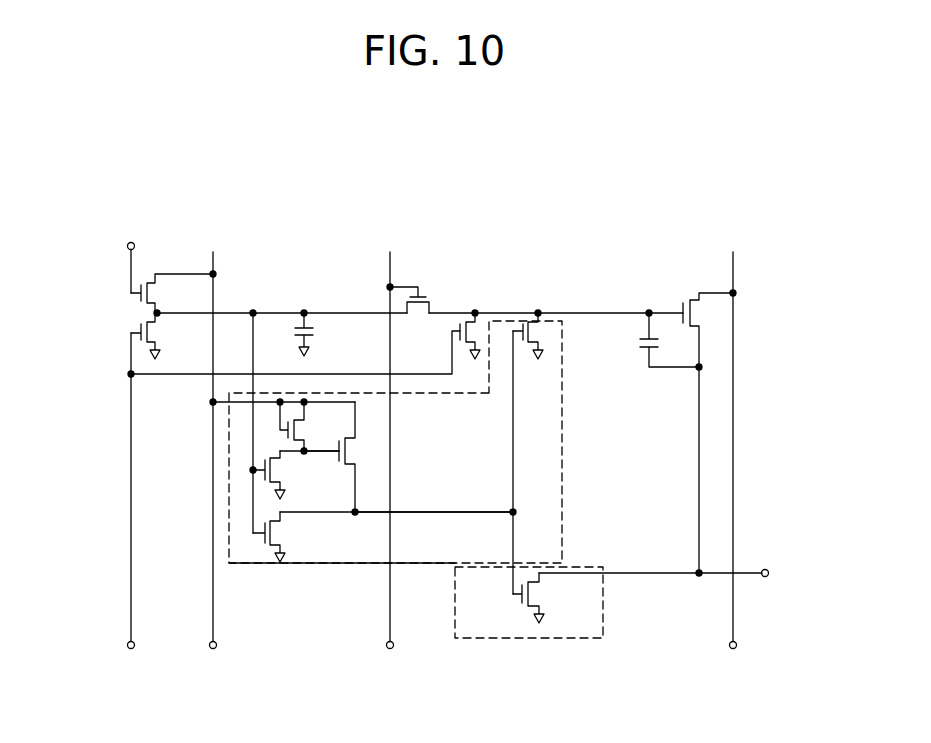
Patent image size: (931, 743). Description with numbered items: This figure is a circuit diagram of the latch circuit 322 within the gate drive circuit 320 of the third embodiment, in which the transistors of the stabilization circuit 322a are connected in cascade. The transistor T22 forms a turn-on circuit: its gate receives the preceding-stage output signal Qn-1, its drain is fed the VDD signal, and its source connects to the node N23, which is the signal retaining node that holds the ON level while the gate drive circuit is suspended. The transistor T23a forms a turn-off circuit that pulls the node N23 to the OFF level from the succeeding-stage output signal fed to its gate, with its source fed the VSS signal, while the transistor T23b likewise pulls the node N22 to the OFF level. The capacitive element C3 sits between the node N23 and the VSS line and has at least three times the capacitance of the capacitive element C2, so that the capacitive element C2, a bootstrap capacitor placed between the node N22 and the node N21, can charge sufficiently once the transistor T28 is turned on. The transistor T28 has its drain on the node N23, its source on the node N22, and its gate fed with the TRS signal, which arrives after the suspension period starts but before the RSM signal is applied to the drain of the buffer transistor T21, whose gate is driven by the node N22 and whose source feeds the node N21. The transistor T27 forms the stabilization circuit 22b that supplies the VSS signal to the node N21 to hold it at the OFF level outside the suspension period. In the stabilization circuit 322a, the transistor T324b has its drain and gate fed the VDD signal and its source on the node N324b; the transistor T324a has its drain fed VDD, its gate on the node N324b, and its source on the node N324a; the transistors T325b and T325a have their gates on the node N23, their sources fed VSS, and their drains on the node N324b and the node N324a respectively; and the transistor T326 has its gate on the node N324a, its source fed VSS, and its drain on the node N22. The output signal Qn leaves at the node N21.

The gate drive circuit 320 is at (254, 113).
The latch circuit 322 is at (585, 195).
The stabilization circuit 322a is at (563, 357).
The stabilization circuit 22b is at (568, 568).
The transistor T22 is at (133, 307).
The transistor T23a is at (132, 325).
The transistor T23b is at (457, 350).
The transistor T326 is at (519, 350).
The node N23 is at (303, 310).
The capacitive element C3 is at (322, 335).
The transistor T28 is at (427, 292).
The node N22 is at (536, 310).
The transistor T21 is at (688, 295).
The capacitive element C2 is at (645, 352).
The transistor T324b is at (307, 425).
The transistor T324a is at (358, 453).
The node N324b is at (318, 455).
The node N324a is at (497, 504).
The transistor T325b is at (285, 467).
The transistor T325a is at (283, 526).
The node N21 is at (685, 570).
The transistor T27 is at (512, 600).
The output signal Qn-1 is at (130, 236).
The VDD signal VDD is at (207, 661).
The VSS signal VSS is at (342, 577).
The TRS signal TRS is at (384, 661).
The RSM signal RSM is at (729, 661).
The stage output signal Qn is at (785, 575).